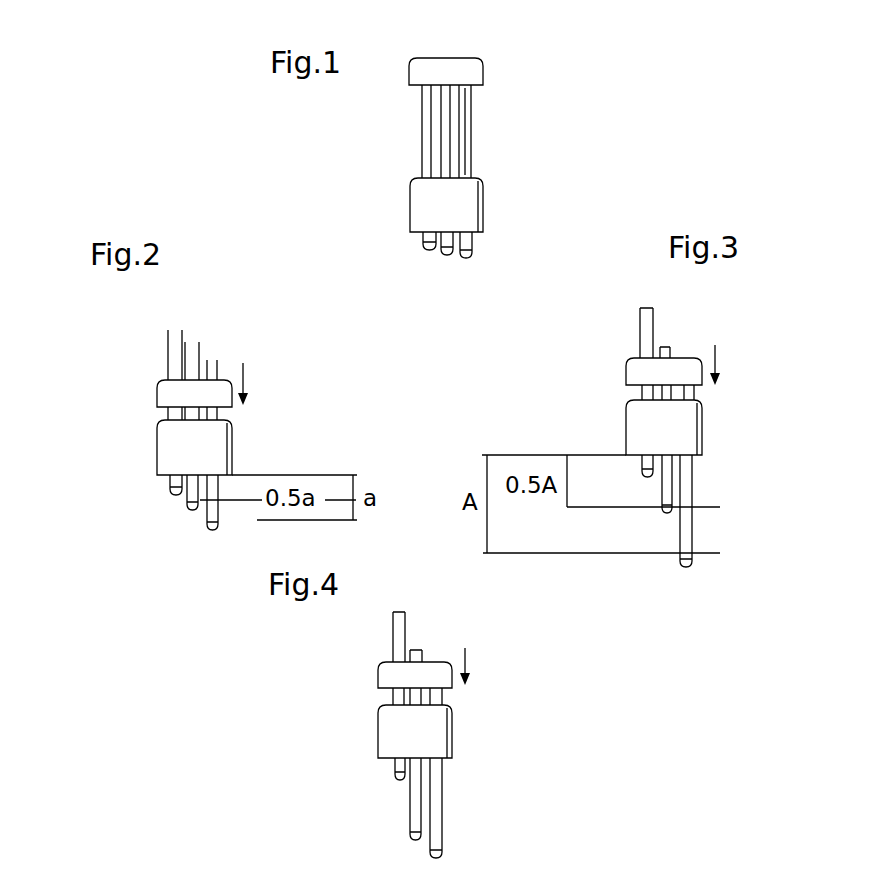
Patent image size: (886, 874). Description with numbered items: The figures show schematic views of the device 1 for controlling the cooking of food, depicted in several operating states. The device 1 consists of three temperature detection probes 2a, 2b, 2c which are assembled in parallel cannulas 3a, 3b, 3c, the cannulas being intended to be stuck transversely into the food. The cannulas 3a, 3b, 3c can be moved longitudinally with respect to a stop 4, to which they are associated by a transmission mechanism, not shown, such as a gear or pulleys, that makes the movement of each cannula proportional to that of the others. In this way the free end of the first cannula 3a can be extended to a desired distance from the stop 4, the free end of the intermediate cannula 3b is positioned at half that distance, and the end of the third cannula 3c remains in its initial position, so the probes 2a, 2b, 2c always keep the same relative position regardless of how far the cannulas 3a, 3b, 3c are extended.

In FIG. 1, the device 1 is at (530, 52).
In FIG. 2, the device 1 is at (138, 325).
In FIG. 3, the device 1 is at (740, 323).
In FIG. 4, the device 1 is at (500, 645).
In FIG. 1, the probe 2a is at (478, 245).
In FIG. 2, the probe 2a is at (215, 522).
In FIG. 3, the probe 2a is at (695, 555).
In FIG. 4, the probe 2a is at (445, 850).
In FIG. 1, the probe 2b is at (445, 250).
In FIG. 2, the probe 2b is at (190, 502).
In FIG. 3, the probe 2b is at (672, 507).
In FIG. 4, the probe 2b is at (410, 835).
In FIG. 1, the probe 2c is at (425, 246).
In FIG. 2, the probe 2c is at (175, 487).
In FIG. 3, the probe 2c is at (650, 467).
In FIG. 4, the probe 2c is at (395, 773).
In FIG. 1, the cannula 3a is at (470, 118).
In FIG. 2, the cannula 3a is at (207, 512).
In FIG. 3, the cannula 3a is at (690, 476).
In FIG. 4, the cannula 3a is at (445, 780).
In FIG. 1, the intermediate cannula 3b is at (445, 148).
In FIG. 2, the intermediate cannula 3b is at (215, 415).
In FIG. 3, the intermediate cannula 3b is at (672, 480).
In FIG. 4, the intermediate cannula 3b is at (432, 765).
In FIG. 1, the cannula 3c is at (430, 148).
In FIG. 2, the cannula 3c is at (170, 420).
In FIG. 3, the cannula 3c is at (645, 392).
In FIG. 4, the cannula 3c is at (398, 697).
In FIG. 1, the stop 4 is at (455, 232).
In FIG. 2, the stop 4 is at (205, 480).
In FIG. 3, the stop 4 is at (680, 455).
In FIG. 4, the stop 4 is at (430, 758).